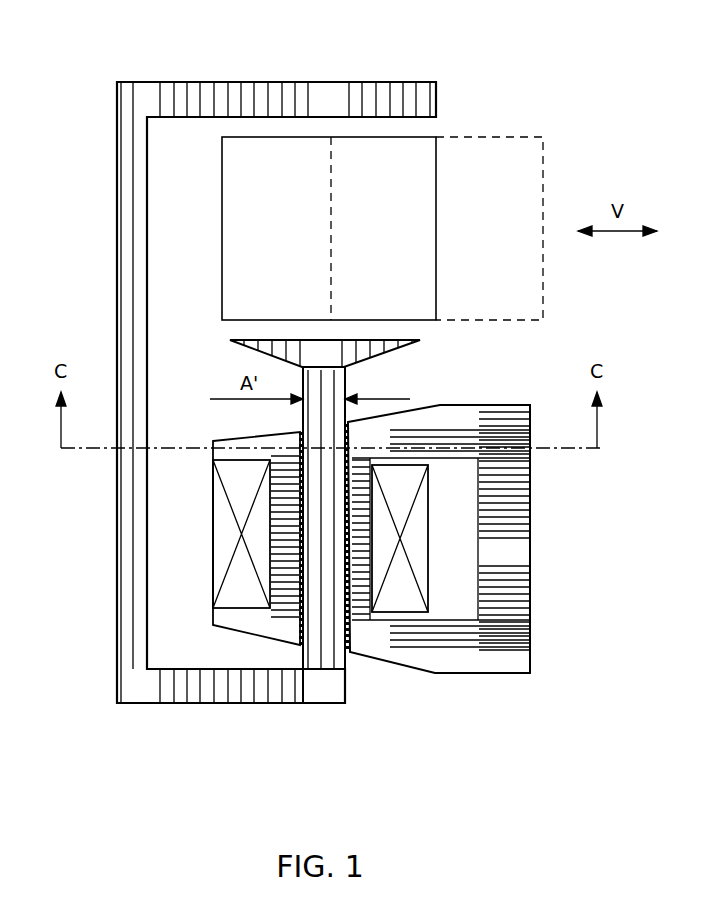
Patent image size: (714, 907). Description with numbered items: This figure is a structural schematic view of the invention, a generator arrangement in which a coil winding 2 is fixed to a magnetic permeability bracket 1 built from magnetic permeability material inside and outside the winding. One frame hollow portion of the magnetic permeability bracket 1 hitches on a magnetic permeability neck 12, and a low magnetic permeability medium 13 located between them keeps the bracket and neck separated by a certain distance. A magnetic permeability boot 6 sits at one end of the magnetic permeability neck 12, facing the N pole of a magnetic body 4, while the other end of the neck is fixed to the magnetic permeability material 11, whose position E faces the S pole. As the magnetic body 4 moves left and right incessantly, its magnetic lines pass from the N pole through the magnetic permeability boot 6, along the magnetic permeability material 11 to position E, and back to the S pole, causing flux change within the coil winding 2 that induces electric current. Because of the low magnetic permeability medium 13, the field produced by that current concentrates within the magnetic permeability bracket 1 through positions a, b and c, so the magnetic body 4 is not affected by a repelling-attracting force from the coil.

The magnetic permeability bracket 1 is at (512, 630).
The coil winding 2 is at (235, 590).
The magnetic body 4 is at (398, 178).
The magnetic permeability boot 6 is at (305, 357).
The magnetic permeability material 11 is at (130, 632).
The magnetic permeability neck 12 is at (325, 640).
The low magnetic permeability medium 13 is at (350, 655).